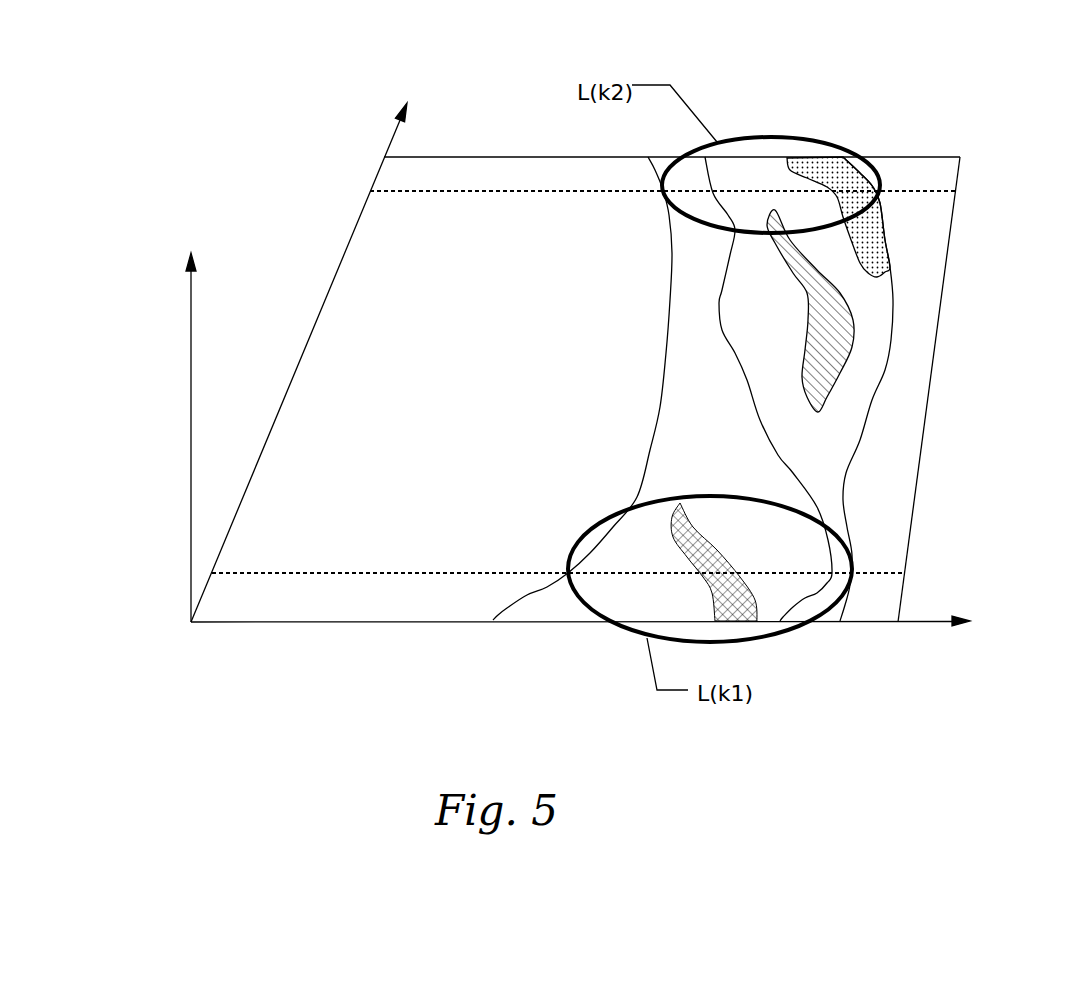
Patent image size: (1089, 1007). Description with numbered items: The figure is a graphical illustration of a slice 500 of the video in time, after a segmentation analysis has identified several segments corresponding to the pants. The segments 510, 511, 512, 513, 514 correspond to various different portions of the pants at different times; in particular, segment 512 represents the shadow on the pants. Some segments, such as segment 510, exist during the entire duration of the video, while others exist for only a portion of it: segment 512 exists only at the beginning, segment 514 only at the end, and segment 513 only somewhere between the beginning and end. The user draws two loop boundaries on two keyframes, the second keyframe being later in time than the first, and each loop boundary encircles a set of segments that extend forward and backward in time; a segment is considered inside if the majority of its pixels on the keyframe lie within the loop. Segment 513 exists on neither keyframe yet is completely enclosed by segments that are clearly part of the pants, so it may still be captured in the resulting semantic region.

The slice of the video in time 500 is at (543, 354).
The segment 510 is at (545, 425).
The segment 511 is at (863, 389).
The segment 512 is at (790, 604).
The segment 513 is at (894, 328).
The segment 514 is at (924, 241).